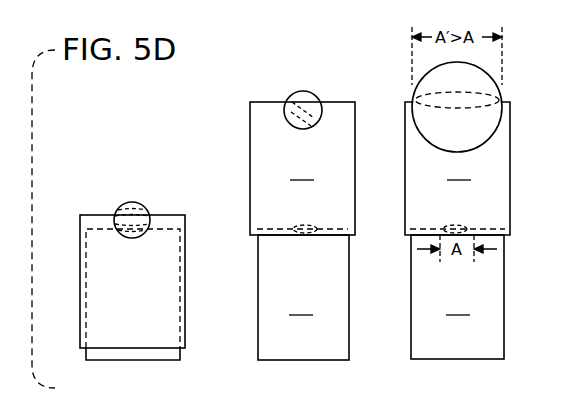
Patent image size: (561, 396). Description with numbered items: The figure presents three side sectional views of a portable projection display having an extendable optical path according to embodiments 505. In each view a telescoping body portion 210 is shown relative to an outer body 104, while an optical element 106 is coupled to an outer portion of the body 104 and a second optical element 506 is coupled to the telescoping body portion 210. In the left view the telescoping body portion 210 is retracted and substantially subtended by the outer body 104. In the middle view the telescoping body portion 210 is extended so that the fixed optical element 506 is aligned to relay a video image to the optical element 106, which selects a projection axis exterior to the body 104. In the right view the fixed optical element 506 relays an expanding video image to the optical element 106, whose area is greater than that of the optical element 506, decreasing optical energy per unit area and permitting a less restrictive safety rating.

The portable projection display having an extendable optical path 505 is at (157, 140).
The outer body 104 is at (186, 219).
The optical element 106 is at (129, 204).
The telescoping body portion 210 is at (186, 281).
The second optical element 506 is at (112, 222).